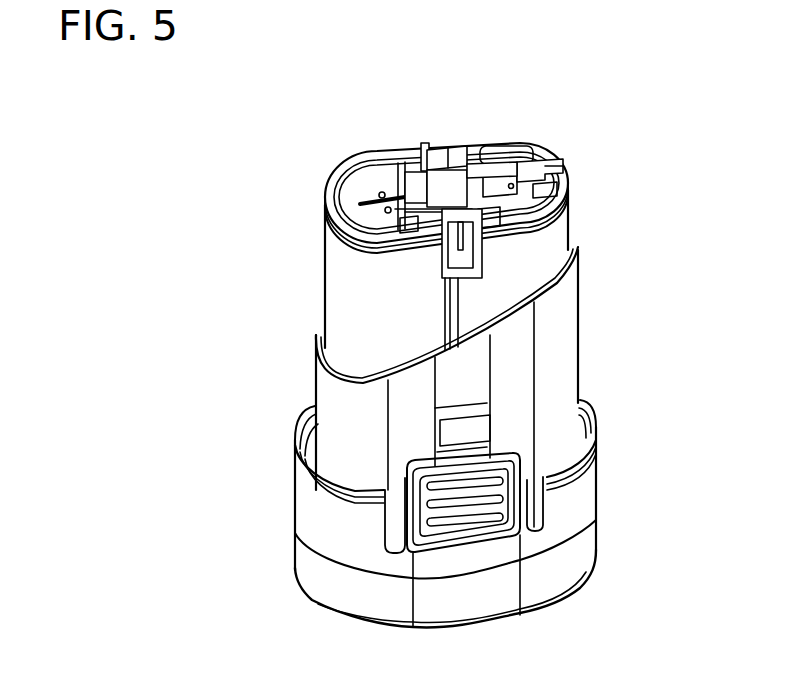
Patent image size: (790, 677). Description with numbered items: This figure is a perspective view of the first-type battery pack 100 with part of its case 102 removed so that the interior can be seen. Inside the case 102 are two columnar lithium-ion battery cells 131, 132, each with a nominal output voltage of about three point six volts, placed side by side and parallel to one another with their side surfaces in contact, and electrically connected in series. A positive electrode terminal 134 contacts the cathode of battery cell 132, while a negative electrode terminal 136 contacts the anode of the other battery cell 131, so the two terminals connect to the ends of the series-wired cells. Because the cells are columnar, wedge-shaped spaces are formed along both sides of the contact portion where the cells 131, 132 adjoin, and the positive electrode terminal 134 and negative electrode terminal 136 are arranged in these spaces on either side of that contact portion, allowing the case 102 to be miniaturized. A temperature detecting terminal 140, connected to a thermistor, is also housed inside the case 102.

The first-type battery pack 100 is at (724, 137).
The case 102 is at (301, 404).
The battery cell 131 is at (477, 311).
The battery cell 132 is at (348, 284).
The positive electrode terminal 134 is at (426, 148).
The negative electrode terminal 136 is at (477, 150).
The temperature detecting terminal 140 is at (567, 159).